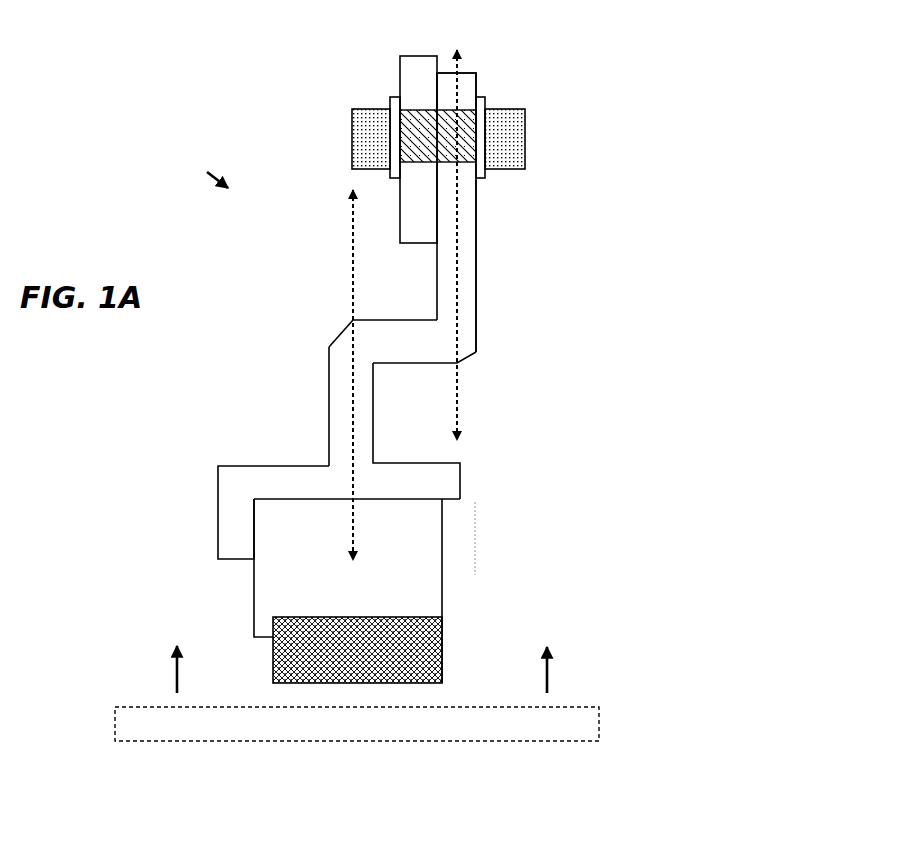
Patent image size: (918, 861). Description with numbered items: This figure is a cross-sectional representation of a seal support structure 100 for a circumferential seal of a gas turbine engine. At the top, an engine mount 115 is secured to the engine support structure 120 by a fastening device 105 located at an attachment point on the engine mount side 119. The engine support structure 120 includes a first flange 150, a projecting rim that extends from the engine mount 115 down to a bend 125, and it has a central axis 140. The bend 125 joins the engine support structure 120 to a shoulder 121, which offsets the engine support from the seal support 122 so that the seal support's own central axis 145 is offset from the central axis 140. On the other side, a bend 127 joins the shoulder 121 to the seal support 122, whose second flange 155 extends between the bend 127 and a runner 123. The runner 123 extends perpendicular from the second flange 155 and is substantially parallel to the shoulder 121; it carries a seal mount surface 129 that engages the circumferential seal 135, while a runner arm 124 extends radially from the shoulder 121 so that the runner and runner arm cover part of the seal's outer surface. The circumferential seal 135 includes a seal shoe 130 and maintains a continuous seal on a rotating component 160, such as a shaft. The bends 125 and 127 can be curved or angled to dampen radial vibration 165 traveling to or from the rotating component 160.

The seal support structure 100 is at (200, 171).
The fastening device 105 is at (352, 138).
The engine mount 115 is at (410, 80).
The engine mount side 119 is at (468, 87).
The engine support structure 120 is at (465, 215).
The shoulder 121 is at (393, 328).
The seal support 122 is at (340, 383).
The runner 123 is at (440, 482).
The runner arm 124 is at (237, 532).
The bend 125 is at (467, 345).
The bend 127 is at (335, 345).
The seal mount surface 129 is at (368, 500).
The seal shoe 130 is at (427, 657).
The circumferential seal 135 is at (427, 573).
The central axis 140 is at (460, 400).
The central axis 145 is at (350, 243).
The first flange 150 is at (477, 267).
The second flange 155 is at (330, 425).
The rotating component 160 is at (115, 725).
The radial vibration 165 is at (170, 673).